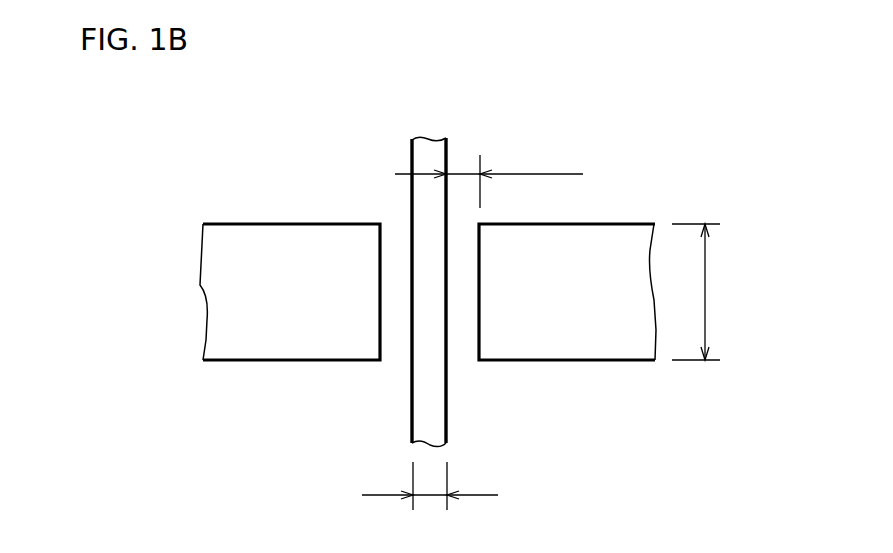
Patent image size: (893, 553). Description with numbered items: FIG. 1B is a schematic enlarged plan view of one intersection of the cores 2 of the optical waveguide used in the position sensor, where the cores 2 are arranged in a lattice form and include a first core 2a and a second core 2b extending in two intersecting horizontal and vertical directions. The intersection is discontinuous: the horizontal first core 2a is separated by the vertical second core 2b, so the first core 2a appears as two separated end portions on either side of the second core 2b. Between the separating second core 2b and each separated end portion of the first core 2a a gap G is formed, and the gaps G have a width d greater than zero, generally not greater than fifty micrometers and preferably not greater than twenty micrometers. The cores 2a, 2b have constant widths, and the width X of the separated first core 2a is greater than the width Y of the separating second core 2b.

The cores 2 is at (374, 276).
The first core 2a is at (239, 240).
The second core 2b is at (428, 208).
The gap G is at (393, 308).
The width of the gaps d is at (489, 164).
The width of the separated first core X is at (710, 292).
The width of the separating second core Y is at (430, 506).